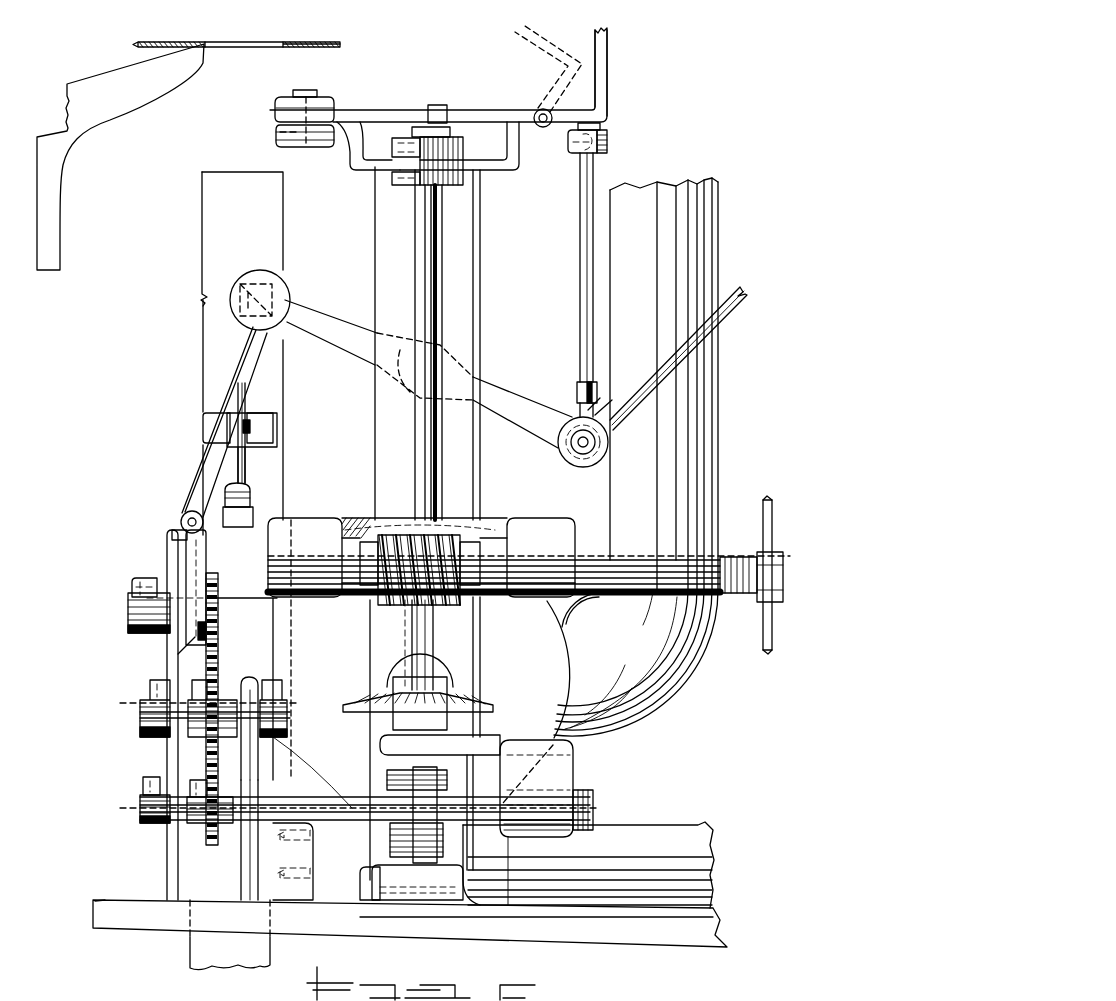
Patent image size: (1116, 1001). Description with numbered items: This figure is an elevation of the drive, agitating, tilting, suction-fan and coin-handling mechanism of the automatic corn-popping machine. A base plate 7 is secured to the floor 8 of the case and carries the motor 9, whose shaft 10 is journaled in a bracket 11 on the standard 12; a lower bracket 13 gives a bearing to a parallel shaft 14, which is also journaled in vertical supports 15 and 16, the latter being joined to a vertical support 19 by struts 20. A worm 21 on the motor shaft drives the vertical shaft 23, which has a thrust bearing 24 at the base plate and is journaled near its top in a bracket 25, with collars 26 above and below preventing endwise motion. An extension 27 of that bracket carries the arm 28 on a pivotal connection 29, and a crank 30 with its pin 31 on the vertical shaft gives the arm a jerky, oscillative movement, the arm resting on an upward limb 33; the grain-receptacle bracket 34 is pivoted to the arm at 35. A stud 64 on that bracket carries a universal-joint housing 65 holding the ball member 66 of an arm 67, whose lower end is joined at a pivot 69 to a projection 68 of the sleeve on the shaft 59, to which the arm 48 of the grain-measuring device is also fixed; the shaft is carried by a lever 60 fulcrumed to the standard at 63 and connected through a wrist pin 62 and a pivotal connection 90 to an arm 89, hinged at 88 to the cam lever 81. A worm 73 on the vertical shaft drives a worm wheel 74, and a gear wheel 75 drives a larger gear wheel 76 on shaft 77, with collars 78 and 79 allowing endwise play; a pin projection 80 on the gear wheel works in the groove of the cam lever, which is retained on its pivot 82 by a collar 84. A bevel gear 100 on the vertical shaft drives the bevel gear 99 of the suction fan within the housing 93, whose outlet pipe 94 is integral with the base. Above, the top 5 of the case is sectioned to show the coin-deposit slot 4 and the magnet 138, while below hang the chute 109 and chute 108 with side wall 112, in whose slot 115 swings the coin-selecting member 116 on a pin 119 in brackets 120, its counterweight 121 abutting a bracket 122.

The coin-deposit slot 4 is at (258, 42).
The top 5 is at (174, 41).
The magnet 138 is at (120, 157).
The base plate 7 is at (117, 903).
The floor 8 is at (616, 384).
The motor 9 is at (765, 640).
The shaft 10 is at (617, 560).
The bracket 11 is at (490, 520).
The standard 12 is at (395, 343).
The bracket 13 is at (487, 740).
The shaft 14 is at (320, 836).
The vertical support 15 is at (168, 848).
The vertical support 16 is at (243, 868).
The vertical support 19 is at (250, 679).
The struts 20 is at (260, 763).
The worm 21 is at (401, 532).
The vertical shaft 23 is at (421, 273).
The thrust bearing 24 is at (377, 900).
The bracket 25 is at (478, 180).
The collars 26 is at (404, 157).
The extension 27 is at (346, 150).
The arm 28 is at (408, 115).
The pivotal connection 29 is at (292, 132).
The crank 30 is at (451, 132).
The pin 31 is at (443, 106).
The upward limb 33 is at (518, 153).
The bracket 34 is at (606, 108).
The pivot 35 is at (541, 110).
The arm 48 is at (731, 311).
The shaft 59 is at (572, 446).
The lever 60 is at (522, 412).
The wrist pin 62 is at (282, 290).
The fulcrum 63 is at (425, 375).
The stud 64 is at (601, 128).
The universal-joint housing 65 is at (570, 142).
The ball member 66 is at (585, 150).
The arm 67 is at (581, 268).
The projection 68 is at (580, 400).
The pivot 69 is at (600, 392).
The worm 73 is at (452, 777).
The worm wheel 74 is at (420, 806).
The gear wheel 75 is at (195, 800).
The gear wheel 76 is at (219, 615).
The shaft 77 is at (141, 718).
The collars 78 is at (287, 701).
The collars 79 is at (591, 797).
The pin projection 80 is at (178, 654).
The cam lever 81 is at (209, 560).
The pivot 82 is at (129, 612).
The collar 84 is at (133, 588).
The hinge 88 is at (181, 521).
The arm 89 is at (208, 463).
The pivotal connection 90 is at (241, 330).
The housing 93 is at (421, 740).
The outlet pipe 94 is at (588, 865).
The bevel gear 99 is at (401, 670).
The bevel gear 100 is at (366, 708).
The chute 108 is at (284, 236).
The chute 109 is at (283, 358).
The side wall 112 is at (222, 417).
The slot 115 is at (246, 472).
The coin-selecting member 116 is at (249, 408).
The pin 119 is at (262, 428).
The brackets 120 is at (232, 445).
The counterweight 121 is at (252, 490).
The bracket 122 is at (254, 515).